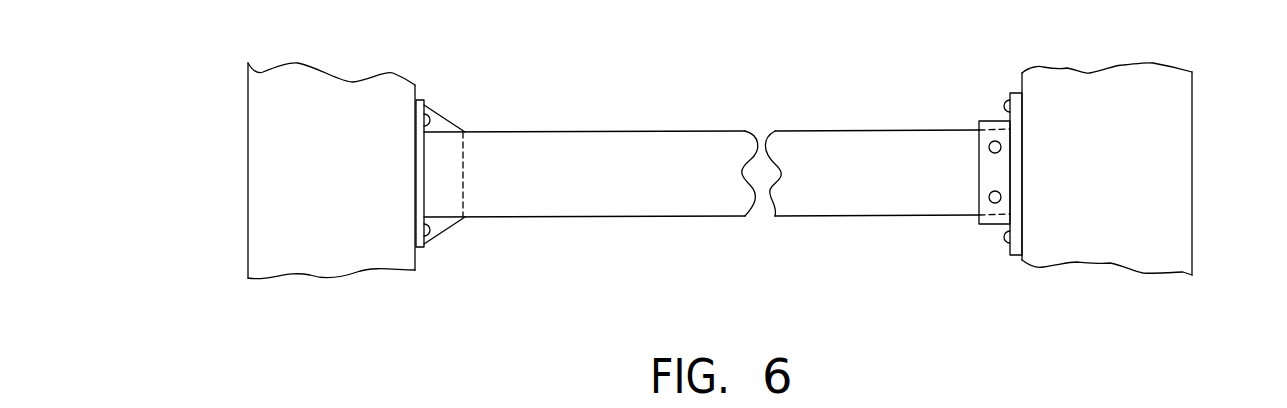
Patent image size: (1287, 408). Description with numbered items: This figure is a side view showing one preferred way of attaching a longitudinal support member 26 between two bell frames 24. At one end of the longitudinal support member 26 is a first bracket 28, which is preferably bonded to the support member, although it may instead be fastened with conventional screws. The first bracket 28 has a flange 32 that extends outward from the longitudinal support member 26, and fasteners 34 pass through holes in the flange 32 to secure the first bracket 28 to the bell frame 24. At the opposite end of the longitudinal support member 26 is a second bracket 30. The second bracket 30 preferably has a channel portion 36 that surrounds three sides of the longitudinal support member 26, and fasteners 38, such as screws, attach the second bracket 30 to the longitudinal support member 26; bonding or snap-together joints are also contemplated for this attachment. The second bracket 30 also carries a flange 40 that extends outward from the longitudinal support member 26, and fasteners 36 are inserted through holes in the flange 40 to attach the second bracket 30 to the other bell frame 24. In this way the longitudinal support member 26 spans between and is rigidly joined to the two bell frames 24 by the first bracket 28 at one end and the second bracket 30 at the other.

The bell frame 24 is at (310, 240).
The longitudinal support member 26 is at (510, 155).
The first bracket 28 is at (440, 123).
The second bracket 30 is at (1010, 92).
The flange 32 is at (422, 103).
The fasteners 34 is at (434, 230).
The channel portion 36 is at (979, 137).
The fasteners 38 is at (1001, 147).
The flange 40 is at (1017, 200).